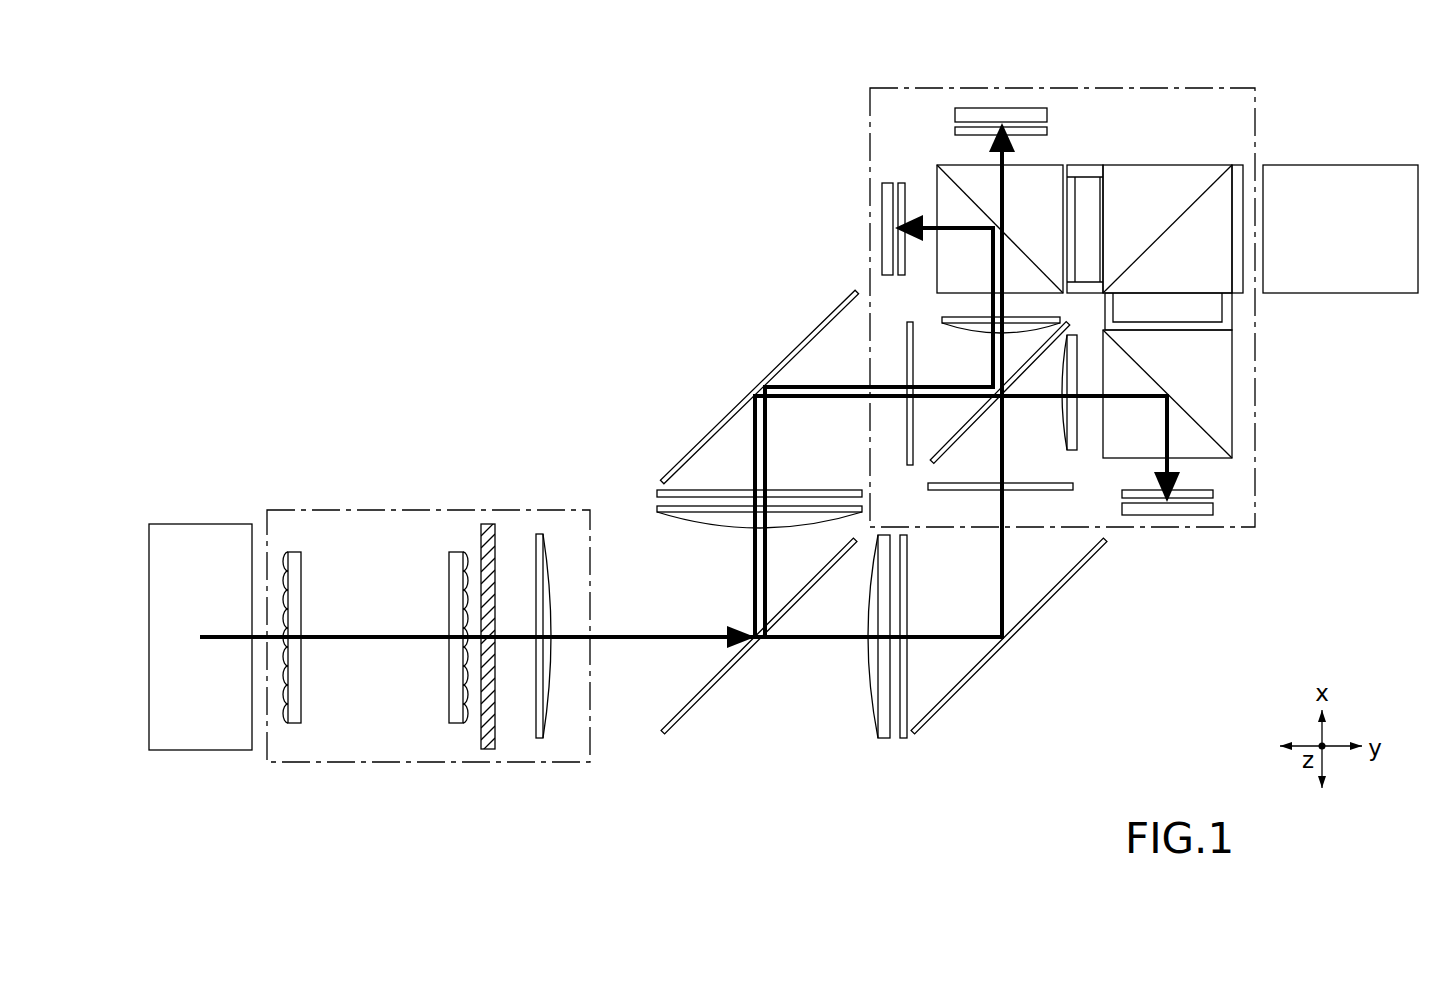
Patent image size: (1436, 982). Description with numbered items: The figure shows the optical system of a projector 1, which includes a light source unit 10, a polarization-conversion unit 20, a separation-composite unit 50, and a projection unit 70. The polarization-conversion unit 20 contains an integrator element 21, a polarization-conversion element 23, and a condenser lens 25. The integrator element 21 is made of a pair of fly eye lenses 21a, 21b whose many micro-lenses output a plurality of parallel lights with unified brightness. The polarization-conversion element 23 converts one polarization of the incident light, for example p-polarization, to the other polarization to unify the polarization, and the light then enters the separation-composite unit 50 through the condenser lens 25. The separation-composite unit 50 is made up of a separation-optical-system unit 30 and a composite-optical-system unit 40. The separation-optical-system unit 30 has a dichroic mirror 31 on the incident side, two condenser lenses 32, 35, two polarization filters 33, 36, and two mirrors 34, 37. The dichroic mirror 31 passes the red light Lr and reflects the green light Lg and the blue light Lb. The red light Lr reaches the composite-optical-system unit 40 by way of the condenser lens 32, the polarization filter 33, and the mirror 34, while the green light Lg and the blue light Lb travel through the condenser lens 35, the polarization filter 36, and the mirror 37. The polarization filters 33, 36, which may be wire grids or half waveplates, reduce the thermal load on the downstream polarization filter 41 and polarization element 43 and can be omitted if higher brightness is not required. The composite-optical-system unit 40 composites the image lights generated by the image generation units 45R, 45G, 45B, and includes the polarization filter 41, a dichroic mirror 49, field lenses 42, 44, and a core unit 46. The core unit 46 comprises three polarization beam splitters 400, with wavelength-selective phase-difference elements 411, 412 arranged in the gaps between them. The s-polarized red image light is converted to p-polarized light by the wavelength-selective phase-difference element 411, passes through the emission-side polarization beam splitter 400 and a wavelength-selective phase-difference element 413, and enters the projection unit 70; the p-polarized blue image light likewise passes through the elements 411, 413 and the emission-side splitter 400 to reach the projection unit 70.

The projector 1 is at (543, 185).
The light source unit 10 is at (203, 524).
The polarization-conversion unit 20 is at (429, 510).
The integrator element 21 is at (454, 806).
The fly eye lens 21a is at (291, 723).
The fly eye lens 21b is at (460, 723).
The polarization-conversion element 23 is at (486, 749).
The condenser lens 25 is at (540, 738).
The separation-optical-system unit 30 is at (773, 332).
The dichroic mirror 31 is at (703, 698).
The condenser lens 32 is at (885, 742).
The polarization filter 33 is at (903, 742).
The mirror 34 is at (950, 698).
The condenser lens 35 is at (657, 510).
The polarization filter 36 is at (657, 493).
The mirror 37 is at (700, 440).
The composite-optical-system unit 40 is at (870, 215).
The polarization filter 41 is at (1023, 490).
The field lens 42 is at (940, 320).
The polarization element 43 is at (907, 432).
The field lens 44 is at (1078, 445).
The image generation unit 45R is at (1007, 108).
The image generation unit 45G is at (1187, 515).
The image generation unit 45B is at (888, 182).
The core unit 46 is at (1133, 143).
The dichroic mirror 49 is at (932, 462).
The separation-composite unit 50 is at (715, 180).
The projection unit 70 is at (1345, 165).
The polarization beam splitter 400 is at (957, 165).
The wavelength-selective phase-difference element 411 is at (1087, 188).
The wavelength-selective phase-difference element 412 is at (1207, 307).
The wavelength-selective phase-difference element 413 is at (1237, 170).
The red light Lr is at (825, 640).
The green light Lg is at (753, 592).
The blue light Lb is at (767, 573).